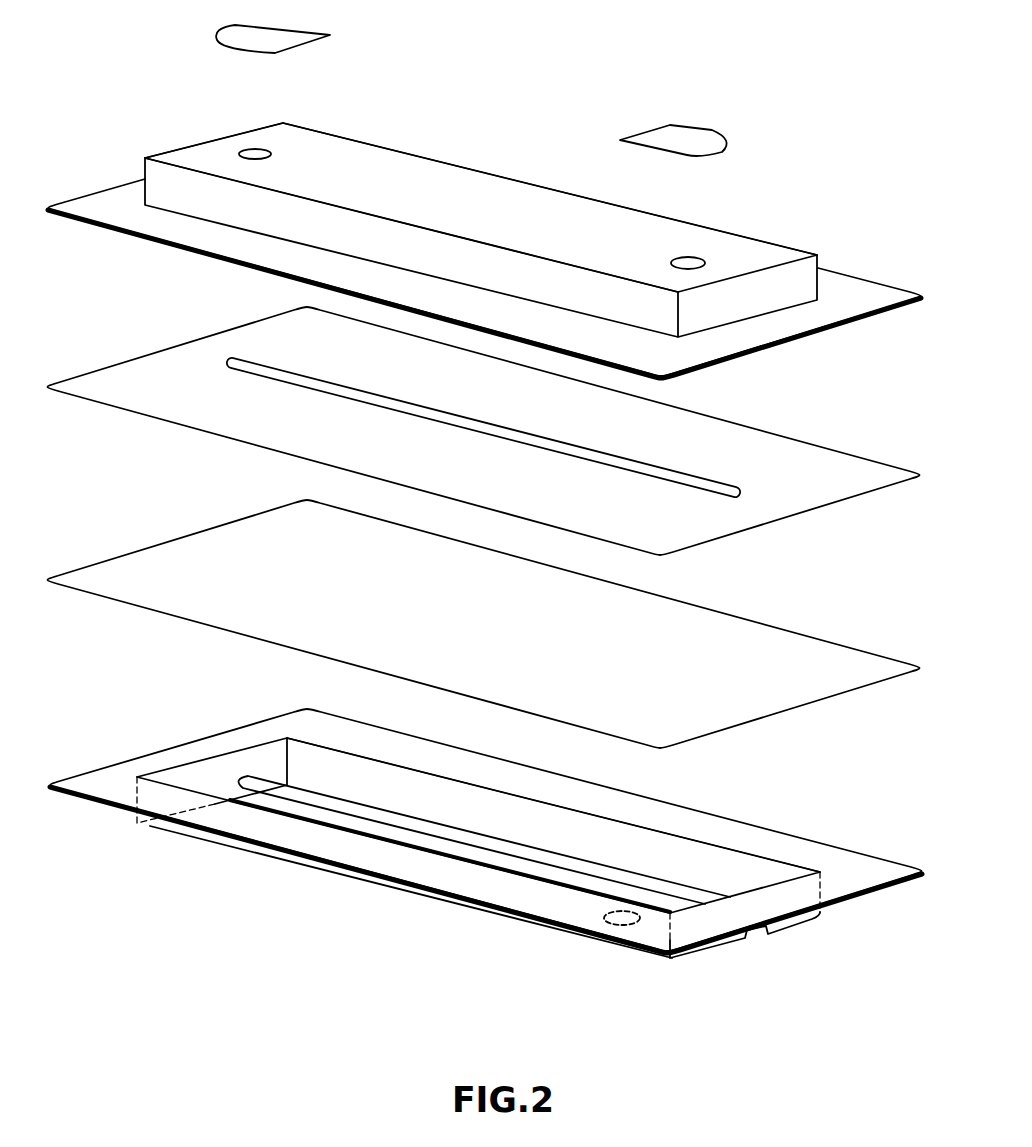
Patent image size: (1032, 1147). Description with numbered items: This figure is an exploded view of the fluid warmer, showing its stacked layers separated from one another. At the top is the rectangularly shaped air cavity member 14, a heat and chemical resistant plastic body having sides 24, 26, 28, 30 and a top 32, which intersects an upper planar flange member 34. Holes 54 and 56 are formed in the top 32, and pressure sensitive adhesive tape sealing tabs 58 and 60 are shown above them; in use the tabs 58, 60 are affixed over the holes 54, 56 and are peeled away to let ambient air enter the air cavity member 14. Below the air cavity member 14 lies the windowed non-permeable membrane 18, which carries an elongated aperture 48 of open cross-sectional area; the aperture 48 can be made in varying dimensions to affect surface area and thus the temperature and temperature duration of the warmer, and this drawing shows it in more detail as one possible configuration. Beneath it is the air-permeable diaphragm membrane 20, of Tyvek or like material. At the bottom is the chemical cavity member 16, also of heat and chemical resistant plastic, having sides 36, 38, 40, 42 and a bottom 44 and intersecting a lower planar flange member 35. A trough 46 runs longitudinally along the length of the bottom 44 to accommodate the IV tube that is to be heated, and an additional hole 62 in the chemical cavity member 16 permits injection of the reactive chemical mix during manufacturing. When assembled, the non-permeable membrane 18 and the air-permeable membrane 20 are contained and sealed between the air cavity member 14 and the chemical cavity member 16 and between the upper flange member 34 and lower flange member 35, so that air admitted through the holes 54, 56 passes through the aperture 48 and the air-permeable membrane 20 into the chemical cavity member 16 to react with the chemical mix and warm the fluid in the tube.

The air cavity member 14 is at (464, 207).
The chemical cavity member 16 is at (486, 847).
The windowed non-permeable membrane 18 is at (483, 431).
The air-permeable diaphragm membrane 20 is at (824, 667).
The side 24 is at (486, 278).
The side 26 is at (428, 252).
The side 28 is at (203, 158).
The side 30 is at (388, 157).
The top 32 is at (308, 141).
The upper planar flange member 34 is at (843, 300).
The lower planar flange member 35 is at (843, 862).
The side 36 is at (712, 946).
The side 38 is at (358, 877).
The side 40 is at (457, 821).
The side 42 is at (645, 842).
The bottom 44 is at (805, 920).
The trough 46 is at (317, 808).
The elongated aperture 48 is at (318, 390).
The hole 54 is at (250, 148).
The hole 56 is at (686, 257).
The pressure sensitive adhesive tape sealing tab 58 is at (303, 33).
The pressure sensitive adhesive tape sealing tab 60 is at (700, 137).
The additional hole 62 is at (605, 924).